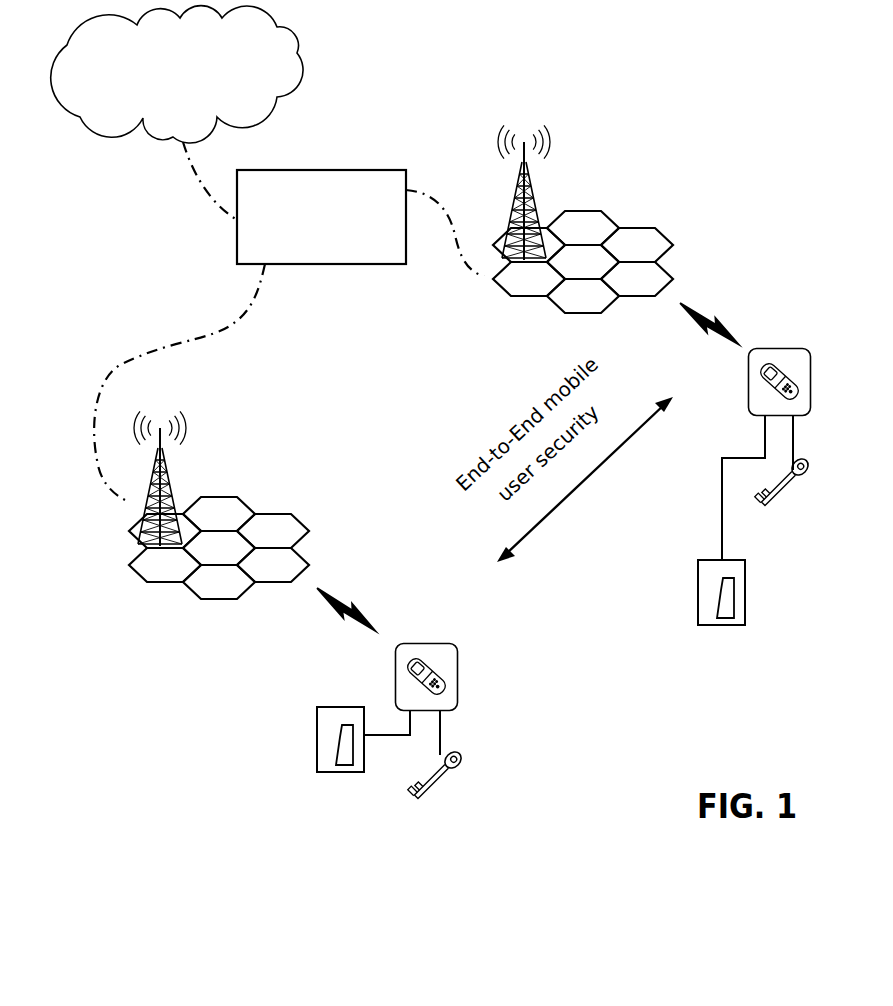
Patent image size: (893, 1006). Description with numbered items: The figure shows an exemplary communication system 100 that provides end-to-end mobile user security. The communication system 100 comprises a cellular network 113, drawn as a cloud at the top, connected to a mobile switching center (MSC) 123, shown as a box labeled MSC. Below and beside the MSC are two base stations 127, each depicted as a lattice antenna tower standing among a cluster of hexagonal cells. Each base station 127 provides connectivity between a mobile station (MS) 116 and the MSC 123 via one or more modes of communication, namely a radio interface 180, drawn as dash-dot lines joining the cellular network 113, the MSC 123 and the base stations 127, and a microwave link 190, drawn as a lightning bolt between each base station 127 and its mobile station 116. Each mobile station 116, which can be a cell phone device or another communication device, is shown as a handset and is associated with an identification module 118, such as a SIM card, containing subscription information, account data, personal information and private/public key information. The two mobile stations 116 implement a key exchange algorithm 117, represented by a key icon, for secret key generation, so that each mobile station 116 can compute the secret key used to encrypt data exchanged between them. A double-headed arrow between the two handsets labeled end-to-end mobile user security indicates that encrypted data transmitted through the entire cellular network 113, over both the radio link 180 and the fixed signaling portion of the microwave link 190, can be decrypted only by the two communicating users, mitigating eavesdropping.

The communication system 100 is at (745, 757).
The cellular network 113 is at (177, 74).
The mobile station (MS) 116 is at (808, 368).
The key exchange algorithm 117 is at (792, 487).
The identification module 118 is at (748, 582).
The mobile switching center (MSC) 123 is at (370, 170).
The base station (BTS) 127 is at (218, 503).
The radio interface 180 is at (460, 262).
The microwave link 190 is at (714, 324).